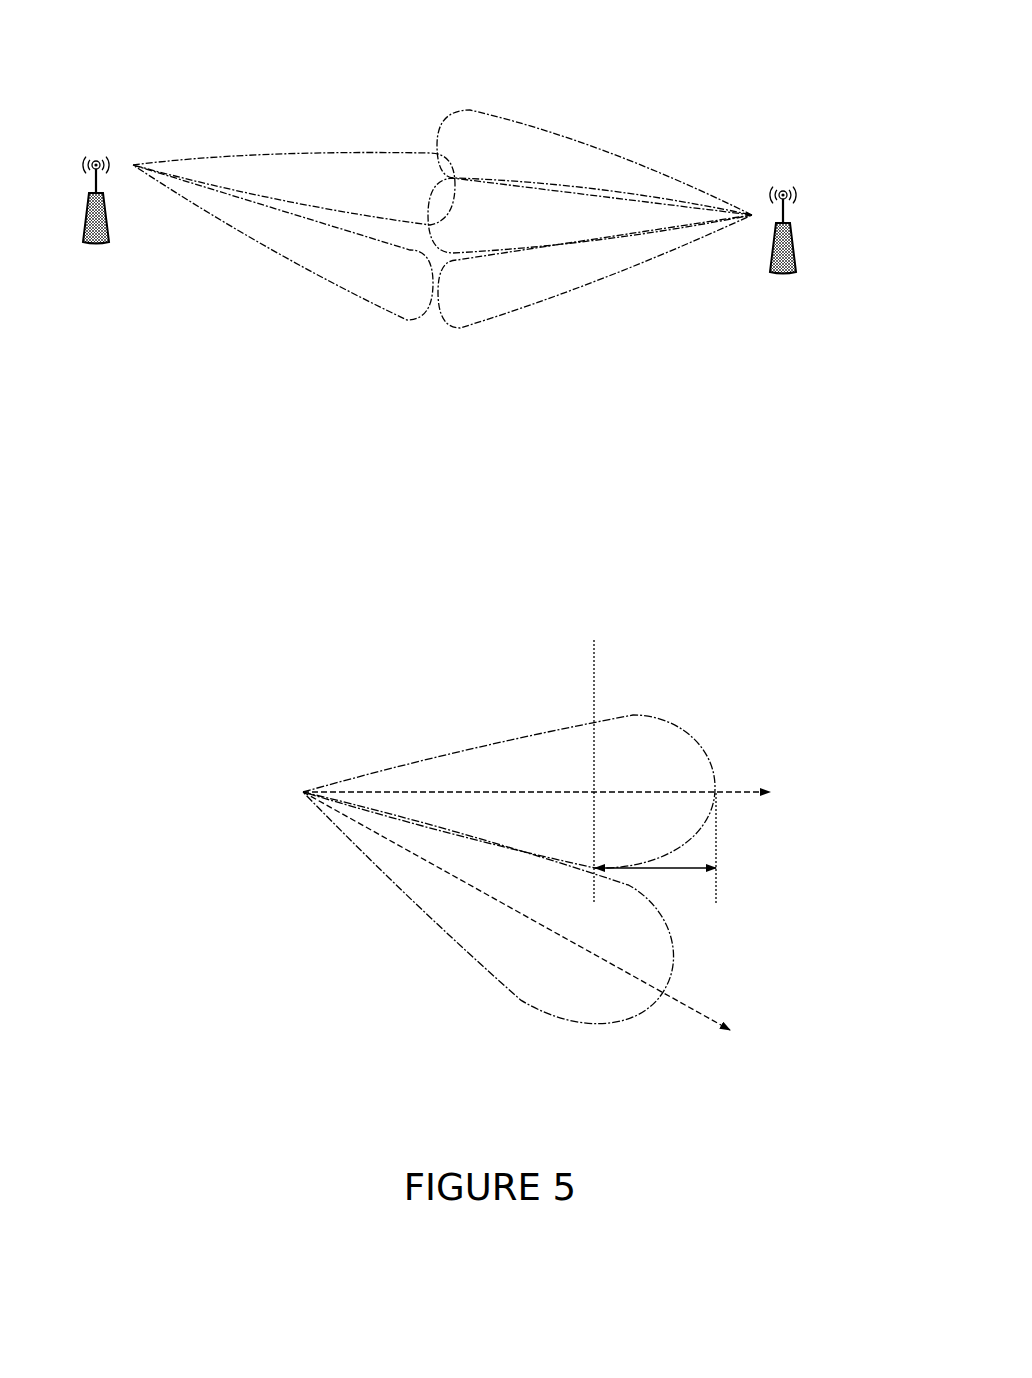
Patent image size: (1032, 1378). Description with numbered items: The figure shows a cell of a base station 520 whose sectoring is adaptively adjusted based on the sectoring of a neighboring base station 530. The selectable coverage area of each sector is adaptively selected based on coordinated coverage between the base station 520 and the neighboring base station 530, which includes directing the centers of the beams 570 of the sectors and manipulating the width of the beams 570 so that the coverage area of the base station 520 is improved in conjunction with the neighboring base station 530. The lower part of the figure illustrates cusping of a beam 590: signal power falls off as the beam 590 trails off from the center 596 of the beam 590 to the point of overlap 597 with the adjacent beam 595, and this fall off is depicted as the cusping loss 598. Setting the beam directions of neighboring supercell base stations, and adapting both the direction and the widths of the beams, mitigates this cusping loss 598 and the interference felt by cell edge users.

The base station 520 is at (96, 252).
The neighboring base station 530 is at (771, 302).
The beams 570 is at (442, 173).
The beam 590 is at (643, 732).
The adjacent beam 595 is at (547, 1003).
The center of the beam 596 is at (719, 795).
The point of overlap 597 is at (600, 862).
The cusping loss 598 is at (688, 878).